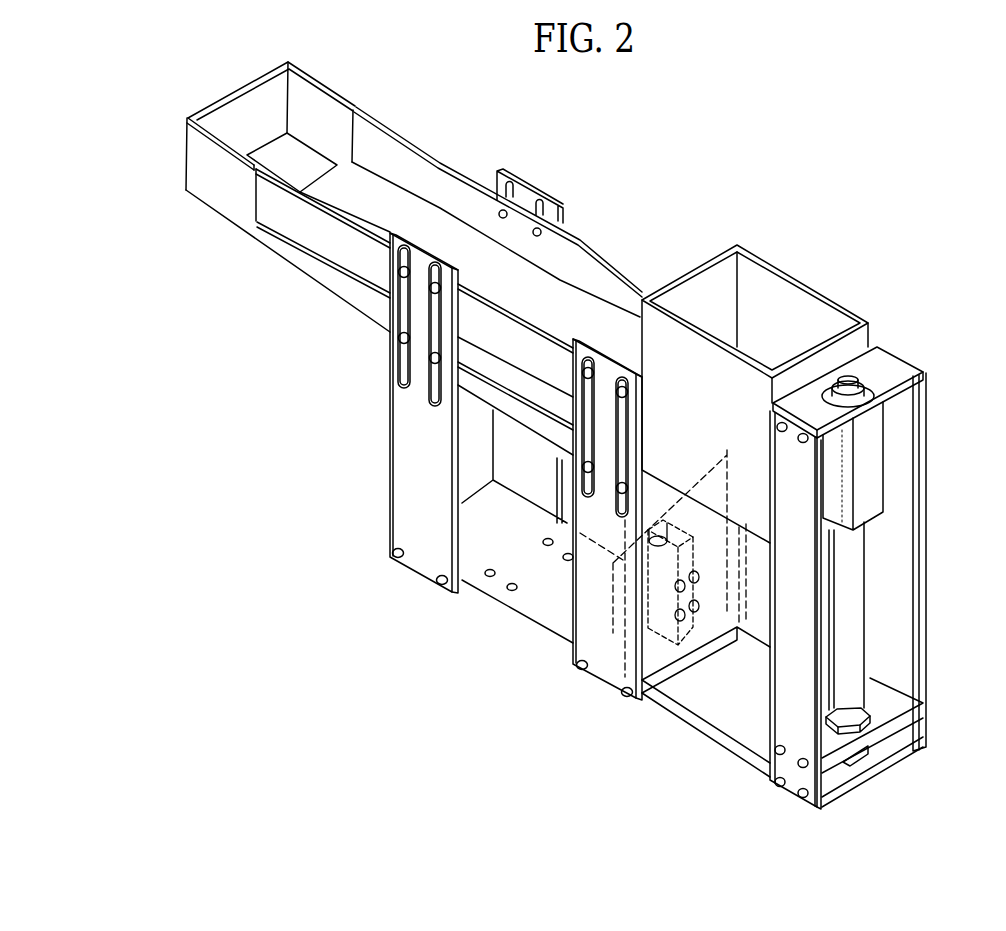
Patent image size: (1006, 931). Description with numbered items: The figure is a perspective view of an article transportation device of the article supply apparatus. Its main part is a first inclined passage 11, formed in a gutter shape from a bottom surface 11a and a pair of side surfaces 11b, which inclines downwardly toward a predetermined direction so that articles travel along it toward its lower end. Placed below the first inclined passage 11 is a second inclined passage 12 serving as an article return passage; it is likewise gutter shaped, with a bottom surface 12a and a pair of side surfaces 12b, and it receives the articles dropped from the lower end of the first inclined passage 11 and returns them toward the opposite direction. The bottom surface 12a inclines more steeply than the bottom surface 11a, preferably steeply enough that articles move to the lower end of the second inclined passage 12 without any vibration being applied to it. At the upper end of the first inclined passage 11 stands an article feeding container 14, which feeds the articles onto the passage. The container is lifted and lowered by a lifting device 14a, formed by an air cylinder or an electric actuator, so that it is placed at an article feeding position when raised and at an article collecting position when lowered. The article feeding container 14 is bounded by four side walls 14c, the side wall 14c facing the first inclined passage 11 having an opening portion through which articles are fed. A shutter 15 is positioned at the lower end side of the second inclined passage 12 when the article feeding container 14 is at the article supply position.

The first inclined passage 11 is at (430, 136).
The bottom surface 11a is at (380, 203).
The side surfaces 11b is at (303, 224).
The second inclined passage 12 is at (295, 293).
The bottom surface 12a is at (280, 163).
The side surfaces 12b is at (302, 104).
The article feeding container 14 is at (821, 274).
The lifting device 14a is at (878, 470).
The side walls 14c is at (710, 285).
The shutter 15 is at (676, 668).